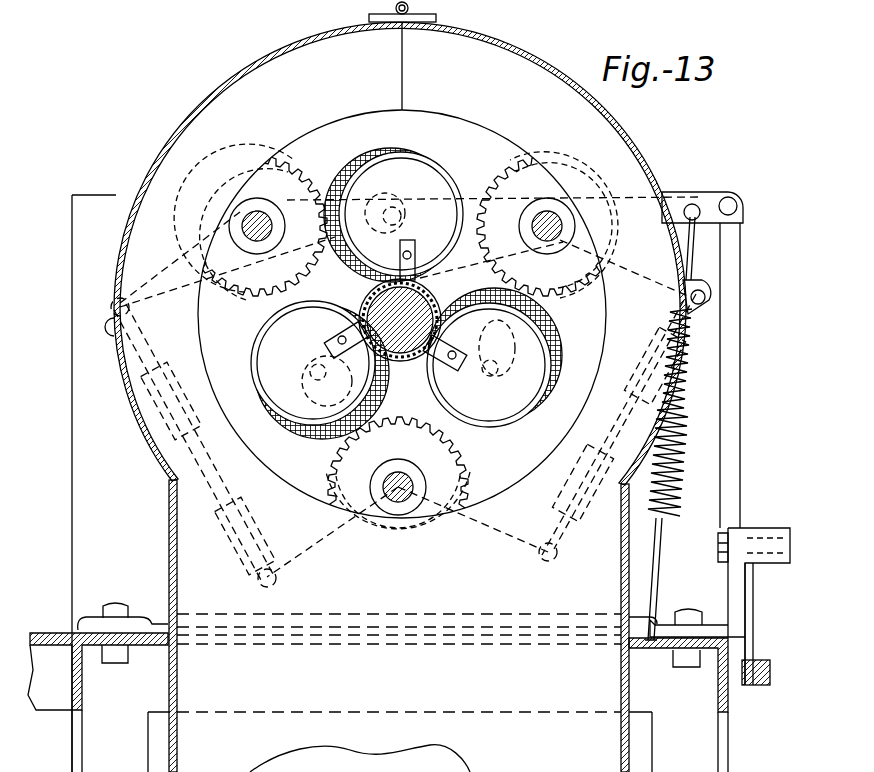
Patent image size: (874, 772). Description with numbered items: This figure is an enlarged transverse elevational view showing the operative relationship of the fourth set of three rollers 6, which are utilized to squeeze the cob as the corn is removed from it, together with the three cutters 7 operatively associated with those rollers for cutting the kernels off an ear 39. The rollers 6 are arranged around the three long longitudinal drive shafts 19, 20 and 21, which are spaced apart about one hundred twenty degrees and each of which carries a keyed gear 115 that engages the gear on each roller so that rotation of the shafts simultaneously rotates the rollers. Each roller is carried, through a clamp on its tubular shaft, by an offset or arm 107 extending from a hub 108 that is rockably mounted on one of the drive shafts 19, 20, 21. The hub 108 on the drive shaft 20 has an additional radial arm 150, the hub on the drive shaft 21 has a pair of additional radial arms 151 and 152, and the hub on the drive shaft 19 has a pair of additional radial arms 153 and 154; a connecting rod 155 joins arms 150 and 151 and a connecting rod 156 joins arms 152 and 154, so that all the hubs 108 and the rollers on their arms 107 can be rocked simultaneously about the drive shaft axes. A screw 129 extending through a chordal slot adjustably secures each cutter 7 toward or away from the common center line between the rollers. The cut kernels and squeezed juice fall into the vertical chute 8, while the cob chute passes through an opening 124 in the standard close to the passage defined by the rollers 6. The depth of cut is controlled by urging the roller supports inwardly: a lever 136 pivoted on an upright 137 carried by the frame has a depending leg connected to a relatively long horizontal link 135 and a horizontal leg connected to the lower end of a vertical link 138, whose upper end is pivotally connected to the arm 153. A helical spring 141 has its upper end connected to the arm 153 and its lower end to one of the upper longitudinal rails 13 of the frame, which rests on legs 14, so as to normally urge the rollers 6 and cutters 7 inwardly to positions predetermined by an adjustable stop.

The fourth set of three rollers 6 is at (388, 147).
The cutters 7 is at (429, 258).
The vertical chute 8 is at (176, 575).
The upper longitudinal rails 13 is at (82, 690).
The legs 14 is at (90, 752).
The drive shaft 19 is at (532, 234).
The drive shaft 20 is at (257, 250).
The drive shaft 21 is at (400, 512).
The ear 39 is at (378, 298).
The arm 107 is at (306, 184).
The hub 108 is at (228, 226).
The gear 115 is at (285, 165).
The opening 124 is at (426, 288).
The screw 129 is at (425, 230).
The horizontal link 135 is at (754, 688).
The lever 136 is at (758, 606).
The upright 137 is at (728, 578).
The vertical link 138 is at (738, 432).
The helical spring 141 is at (670, 506).
The radial arm 150 is at (150, 322).
The radial arm 151 is at (304, 568).
The radial arm 152 is at (508, 560).
The radial arm 153 is at (712, 194).
The radial arm 154 is at (650, 306).
The connecting rod 155 is at (160, 384).
The connecting rod 156 is at (644, 376).